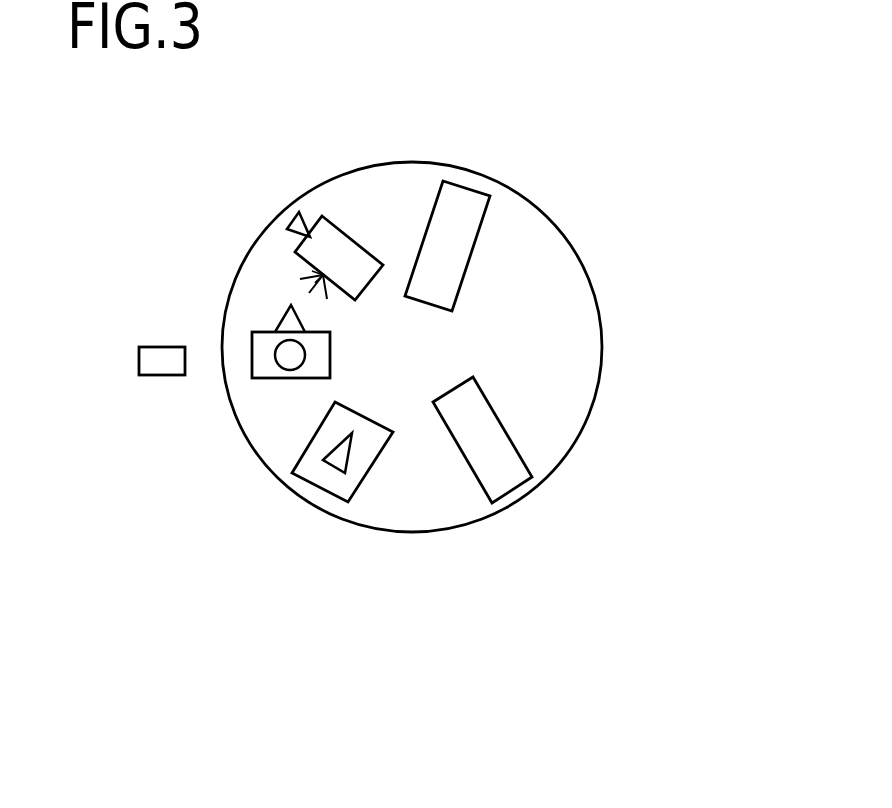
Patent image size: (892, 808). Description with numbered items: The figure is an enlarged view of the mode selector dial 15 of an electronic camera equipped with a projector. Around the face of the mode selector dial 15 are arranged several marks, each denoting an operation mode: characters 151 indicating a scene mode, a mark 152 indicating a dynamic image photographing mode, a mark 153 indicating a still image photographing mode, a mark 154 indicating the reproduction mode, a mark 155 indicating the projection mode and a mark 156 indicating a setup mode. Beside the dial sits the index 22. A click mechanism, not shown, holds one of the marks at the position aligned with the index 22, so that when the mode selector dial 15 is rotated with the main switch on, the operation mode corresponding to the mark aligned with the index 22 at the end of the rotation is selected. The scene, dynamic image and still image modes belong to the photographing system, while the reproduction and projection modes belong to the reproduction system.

The mode selector dial 15 is at (616, 270).
The characters indicating a scene mode 151 is at (466, 188).
The mark indicating a dynamic image photographing mode 152 is at (318, 219).
The mark indicating a still image photographing mode 153 is at (264, 333).
The mark indicating the reproduction mode 154 is at (314, 484).
The mark indicating the projection mode 155 is at (519, 491).
The mark indicating a setup mode 156 is at (591, 352).
The index 22 is at (138, 357).